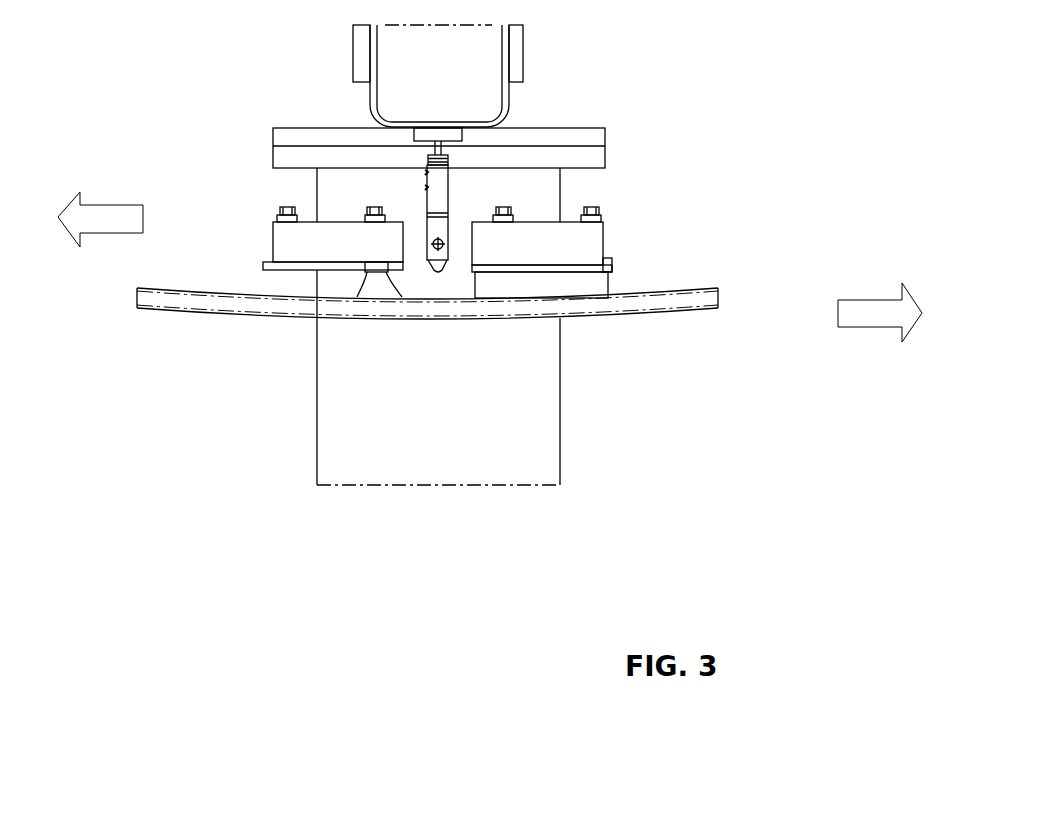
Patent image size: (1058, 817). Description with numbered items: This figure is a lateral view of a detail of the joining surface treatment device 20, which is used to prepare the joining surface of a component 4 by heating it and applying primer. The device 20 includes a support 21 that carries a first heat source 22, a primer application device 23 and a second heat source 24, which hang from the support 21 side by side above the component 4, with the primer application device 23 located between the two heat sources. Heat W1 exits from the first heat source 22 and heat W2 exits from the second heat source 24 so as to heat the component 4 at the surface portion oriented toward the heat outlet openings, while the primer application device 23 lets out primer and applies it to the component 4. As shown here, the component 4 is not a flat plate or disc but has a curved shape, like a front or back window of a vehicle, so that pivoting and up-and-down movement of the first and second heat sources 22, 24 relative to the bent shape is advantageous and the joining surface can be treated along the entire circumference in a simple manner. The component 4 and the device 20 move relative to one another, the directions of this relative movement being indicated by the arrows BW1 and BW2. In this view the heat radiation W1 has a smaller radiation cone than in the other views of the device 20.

The joining surface treatment device 20 is at (782, 92).
The support 21 is at (490, 103).
The first heat source 22 is at (277, 240).
The primer application device 23 is at (441, 275).
The second heat source 24 is at (600, 238).
The component 4 is at (720, 300).
The heat radiation W1 is at (355, 297).
The heat radiation W2 is at (612, 275).
The first movement direction BW1 is at (880, 304).
The second movement direction BW2 is at (100, 210).